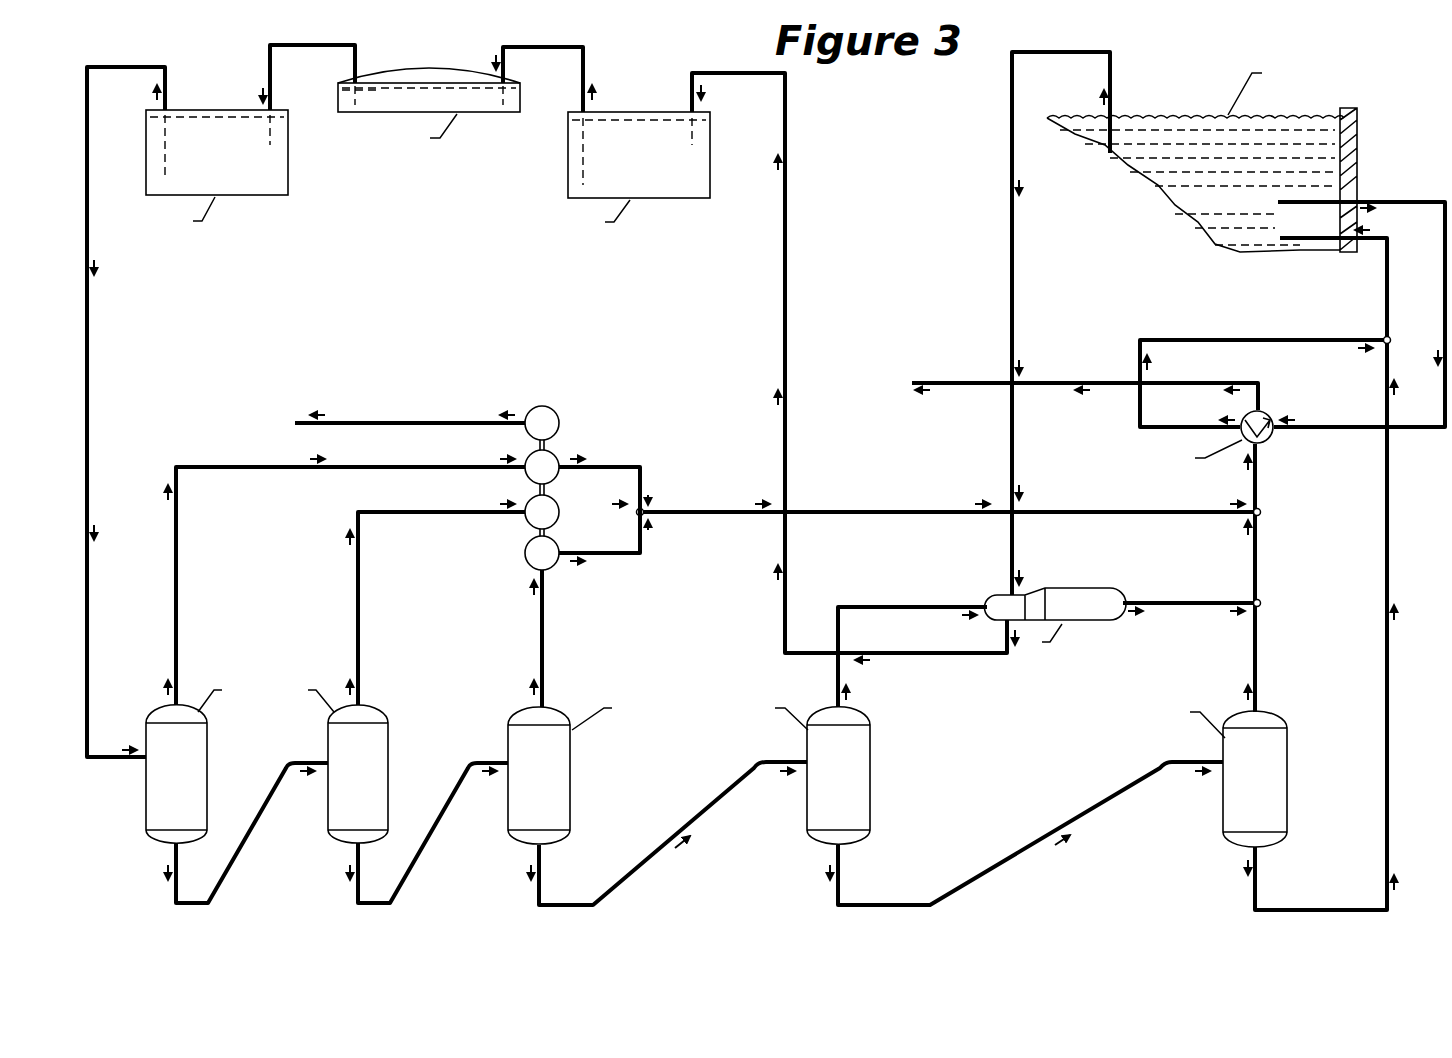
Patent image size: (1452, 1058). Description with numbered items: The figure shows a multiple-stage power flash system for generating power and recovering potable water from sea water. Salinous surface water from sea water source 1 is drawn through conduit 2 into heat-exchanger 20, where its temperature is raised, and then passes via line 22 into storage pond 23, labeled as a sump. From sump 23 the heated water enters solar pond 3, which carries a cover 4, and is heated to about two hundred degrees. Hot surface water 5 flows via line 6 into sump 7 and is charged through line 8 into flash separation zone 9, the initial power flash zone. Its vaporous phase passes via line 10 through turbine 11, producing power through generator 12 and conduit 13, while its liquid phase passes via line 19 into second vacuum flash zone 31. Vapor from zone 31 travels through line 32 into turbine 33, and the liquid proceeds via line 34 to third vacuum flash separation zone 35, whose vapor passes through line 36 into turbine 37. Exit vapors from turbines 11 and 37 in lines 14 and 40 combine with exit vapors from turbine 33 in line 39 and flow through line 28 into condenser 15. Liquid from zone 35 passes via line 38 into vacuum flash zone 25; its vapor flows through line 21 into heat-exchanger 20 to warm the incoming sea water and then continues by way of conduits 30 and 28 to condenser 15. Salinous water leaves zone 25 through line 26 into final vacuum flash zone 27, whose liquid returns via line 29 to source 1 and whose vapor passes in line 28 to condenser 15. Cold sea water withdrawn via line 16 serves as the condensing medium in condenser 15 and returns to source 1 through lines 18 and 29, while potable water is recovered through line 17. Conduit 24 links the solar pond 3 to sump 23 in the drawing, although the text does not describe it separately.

The sea water source 1 is at (1170, 196).
The conduit 2 is at (1113, 75).
The solar pond 3 is at (492, 115).
The cover 4 is at (430, 70).
The hot surface water 5 is at (328, 95).
The line 6 is at (270, 76).
The sump 7 is at (288, 168).
The line 8 is at (120, 62).
The flash separation zone 9 is at (207, 768).
The line 10 is at (482, 467).
The turbine 11 is at (556, 455).
The generator 12 is at (557, 410).
The conduit 13 is at (398, 421).
The line 14 is at (613, 466).
The condenser 15 is at (1268, 440).
The line 16 is at (1397, 198).
The line 17 is at (1260, 398).
The line 18 is at (1355, 338).
The line 19 is at (252, 838).
The heat-exchanger 20 is at (1060, 590).
The line 21 is at (965, 605).
The line 22 is at (710, 70).
The storage pond 23 is at (710, 160).
The conduit from solar pond to sump 24 is at (587, 65).
The vacuum flash zone 25 is at (870, 768).
The line 26 is at (1147, 778).
The final vacuum flash zone 27 is at (1287, 768).
The line 28 is at (1260, 495).
The line 29 is at (1392, 258).
The conduit 30 is at (1160, 603).
The vacuum flash zone 31 is at (388, 768).
The line 32 is at (412, 512).
The turbine 33 is at (557, 500).
The line 34 is at (434, 838).
The vacuum flash separation zone 35 is at (570, 768).
The line 36 is at (545, 660).
The turbine 37 is at (530, 565).
The line 38 is at (742, 785).
The line 39 is at (838, 512).
The line 40 is at (595, 558).